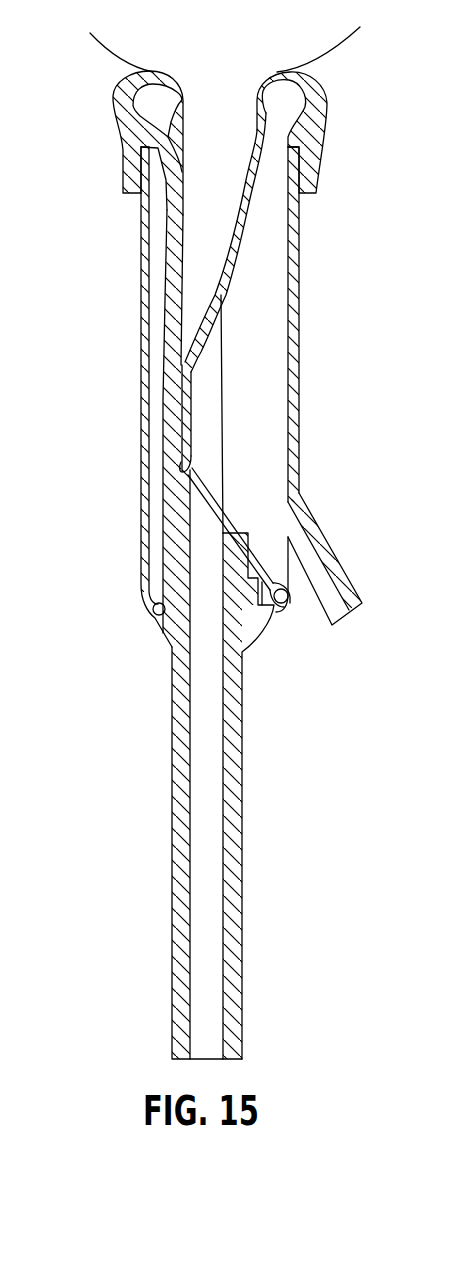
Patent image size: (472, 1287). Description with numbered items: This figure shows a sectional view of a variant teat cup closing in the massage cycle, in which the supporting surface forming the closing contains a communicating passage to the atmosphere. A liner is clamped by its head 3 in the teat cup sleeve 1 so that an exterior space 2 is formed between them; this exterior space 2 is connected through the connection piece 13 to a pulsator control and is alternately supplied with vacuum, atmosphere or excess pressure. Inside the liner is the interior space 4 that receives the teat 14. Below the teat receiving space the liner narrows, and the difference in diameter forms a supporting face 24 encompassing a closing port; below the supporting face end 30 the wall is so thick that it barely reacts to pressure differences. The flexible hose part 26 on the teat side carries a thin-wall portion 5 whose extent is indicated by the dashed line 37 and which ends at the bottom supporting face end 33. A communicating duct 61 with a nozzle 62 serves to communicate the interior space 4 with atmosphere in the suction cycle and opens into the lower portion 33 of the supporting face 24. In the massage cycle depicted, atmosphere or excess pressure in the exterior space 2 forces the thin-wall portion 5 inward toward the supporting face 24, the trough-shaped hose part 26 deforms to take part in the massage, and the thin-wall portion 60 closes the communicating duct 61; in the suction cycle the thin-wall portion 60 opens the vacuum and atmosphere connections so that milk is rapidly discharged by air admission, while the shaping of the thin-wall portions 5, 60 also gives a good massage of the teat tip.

The teat cup sleeve 1 is at (298, 225).
The exterior space 2 is at (272, 294).
The head 3 is at (328, 107).
The interior space 4 is at (175, 357).
The thin-wall portion 5 is at (191, 387).
The connection piece 13 is at (331, 550).
The teat 14 is at (229, 164).
The supporting face 24 is at (232, 556).
The hose part 26 is at (172, 400).
The supporting face end 30 is at (178, 465).
The bottom supporting face end 33 is at (293, 603).
The dashed line 37 is at (222, 417).
The thin-wall portion 60 is at (218, 506).
The communicating duct 61 is at (253, 588).
The nozzle 62 is at (255, 620).